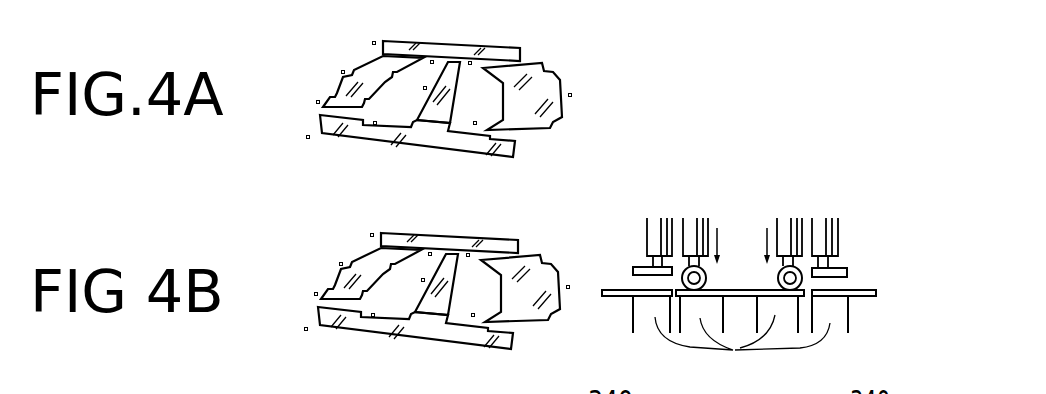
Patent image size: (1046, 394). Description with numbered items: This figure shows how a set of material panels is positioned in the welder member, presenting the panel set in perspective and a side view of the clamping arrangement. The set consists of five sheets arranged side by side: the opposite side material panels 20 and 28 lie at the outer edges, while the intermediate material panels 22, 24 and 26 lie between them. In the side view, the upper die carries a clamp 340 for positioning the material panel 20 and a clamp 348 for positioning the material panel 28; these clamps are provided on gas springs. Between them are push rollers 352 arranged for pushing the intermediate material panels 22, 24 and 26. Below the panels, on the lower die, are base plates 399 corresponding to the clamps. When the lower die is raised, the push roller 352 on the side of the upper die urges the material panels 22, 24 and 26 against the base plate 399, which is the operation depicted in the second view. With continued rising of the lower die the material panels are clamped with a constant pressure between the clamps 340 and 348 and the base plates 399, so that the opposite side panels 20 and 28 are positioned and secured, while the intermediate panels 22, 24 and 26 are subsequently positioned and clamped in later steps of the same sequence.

In FIG. 4A, the material panel 20 is at (507, 43).
In FIG. 4B, the material panel 20 is at (862, 290).
In FIG. 4A, the material panel 22 is at (335, 88).
In FIG. 4A, the material panel 24 is at (420, 107).
In FIG. 4A, the material panel 26 is at (562, 107).
In FIG. 4B, the material panel 26 is at (740, 289).
In FIG. 4A, the material panel 28 is at (513, 150).
In FIG. 4B, the material panel 28 is at (605, 289).
In FIG. 4B, the clamp 348 is at (652, 232).
In FIG. 4B, the push roller 352 is at (692, 227).
In FIG. 4B, the clamp 340 is at (838, 227).
In FIG. 4B, the base plate 399 is at (740, 341).